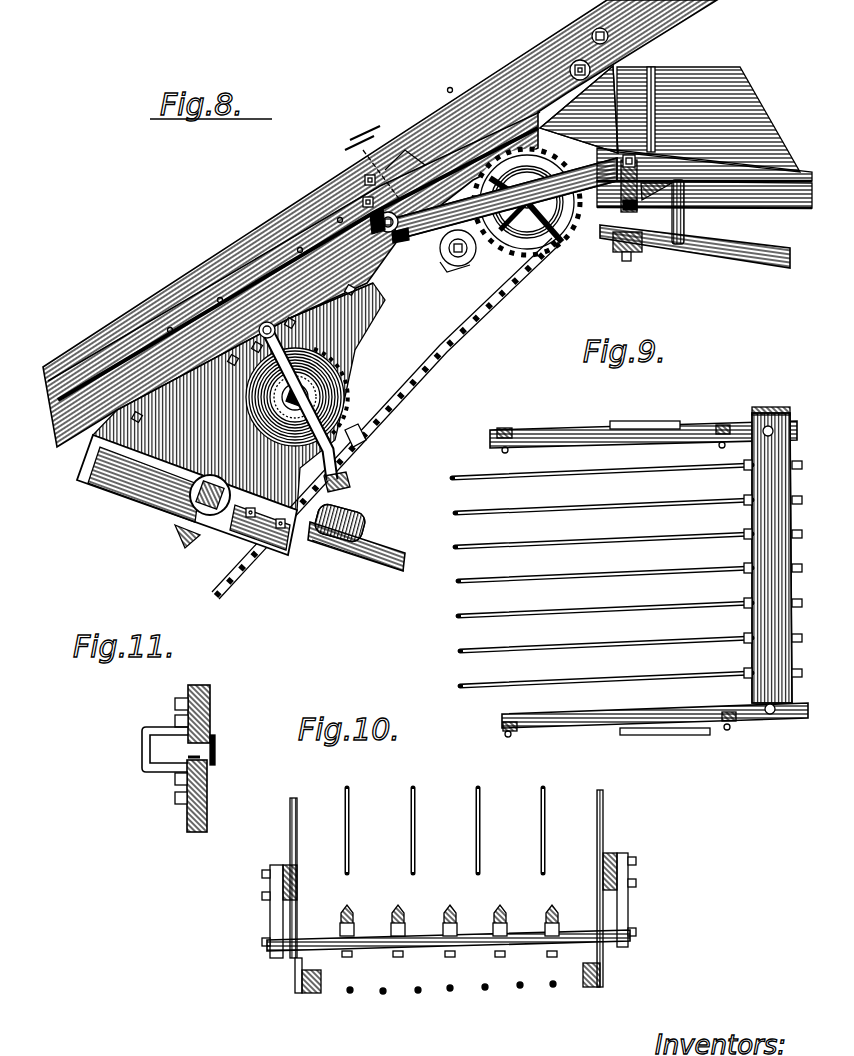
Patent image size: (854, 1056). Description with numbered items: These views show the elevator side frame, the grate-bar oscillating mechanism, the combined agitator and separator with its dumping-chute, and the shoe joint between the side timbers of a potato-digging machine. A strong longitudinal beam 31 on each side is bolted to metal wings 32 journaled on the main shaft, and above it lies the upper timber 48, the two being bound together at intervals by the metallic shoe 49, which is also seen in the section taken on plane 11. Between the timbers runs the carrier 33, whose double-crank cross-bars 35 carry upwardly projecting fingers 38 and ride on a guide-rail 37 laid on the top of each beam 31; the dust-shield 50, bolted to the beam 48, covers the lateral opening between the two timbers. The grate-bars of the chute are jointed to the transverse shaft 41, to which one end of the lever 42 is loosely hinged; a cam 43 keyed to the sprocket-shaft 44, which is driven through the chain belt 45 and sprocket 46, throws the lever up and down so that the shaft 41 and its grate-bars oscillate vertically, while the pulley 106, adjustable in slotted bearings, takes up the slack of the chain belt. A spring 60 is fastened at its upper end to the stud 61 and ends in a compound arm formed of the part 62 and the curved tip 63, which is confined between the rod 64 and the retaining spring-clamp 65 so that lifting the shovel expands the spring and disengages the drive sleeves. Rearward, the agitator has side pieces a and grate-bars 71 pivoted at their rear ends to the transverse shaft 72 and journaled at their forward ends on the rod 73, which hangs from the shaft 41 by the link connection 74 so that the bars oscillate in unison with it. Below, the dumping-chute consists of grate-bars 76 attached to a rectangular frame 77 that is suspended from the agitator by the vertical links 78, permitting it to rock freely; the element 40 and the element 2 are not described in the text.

In FIG. 8, the upper timber 48 is at (540, 50).
In FIG. 11, the upper timber 48 is at (210, 691).
In FIG. 8, the plane 11 is at (371, 157).
In FIG. 8, the brace 40 is at (405, 162).
In FIG. 8, the lever 42 is at (579, 109).
In FIG. 8, the transverse shaft 41 is at (652, 150).
In FIG. 8, the side piece a is at (708, 119).
In FIG. 10, the side piece a is at (297, 832).
In FIG. 8, the link connection 74 is at (704, 164).
In FIG. 8, the grate-bar 71 is at (760, 192).
In FIG. 10, the grate-bar 71 is at (398, 912).
In FIG. 8, the transverse rod 73 is at (626, 192).
In FIG. 8, the vertical link 78 is at (673, 220).
In FIG. 9, the vertical link 78 is at (503, 428).
In FIG. 10, the vertical link 78 is at (300, 905).
In FIG. 8, the rectangular frame 77 is at (715, 252).
In FIG. 9, the rectangular frame 77 is at (563, 432).
In FIG. 10, the rectangular frame 77 is at (322, 969).
In FIG. 8, the sprocket-shaft 44 is at (556, 226).
In FIG. 8, the cam 43 is at (538, 222).
In FIG. 8, the beam 31 is at (483, 250).
In FIG. 11, the beam 31 is at (207, 784).
In FIG. 8, the pulley 106 is at (463, 267).
In FIG. 8, the finger 38 is at (522, 288).
In FIG. 8, the chain belt 45 is at (462, 266).
In FIG. 8, the dust-shield 50 is at (261, 286).
In FIG. 8, the stud 61 is at (271, 301).
In FIG. 8, the carrier 33 is at (239, 396).
In FIG. 8, the wing 32 is at (367, 344).
In FIG. 8, the sprocket 46 is at (347, 378).
In FIG. 8, the spring 60 is at (320, 447).
In FIG. 8, the arm part 62 is at (342, 479).
In FIG. 8, the spring-clamp 65 is at (352, 514).
In FIG. 8, the rod 64 is at (375, 553).
In FIG. 8, the curved tip 63 is at (347, 547).
In FIG. 8, the cross-bar 35 is at (360, 429).
In FIG. 8, the cross bracket 2 is at (212, 508).
In FIG. 9, the grate-bar 76 is at (551, 509).
In FIG. 10, the grate-bar 76 is at (450, 990).
In FIG. 10, the transverse shaft 72 is at (468, 948).
In FIG. 11, the metallic shoe 49 is at (148, 749).
In FIG. 11, the guide-rail 37 is at (192, 759).